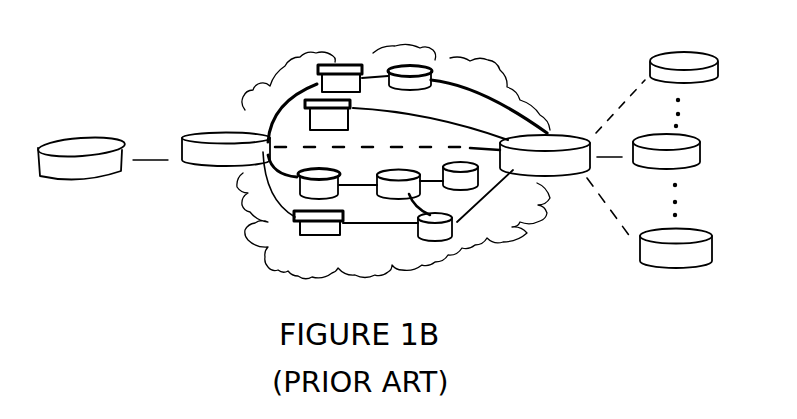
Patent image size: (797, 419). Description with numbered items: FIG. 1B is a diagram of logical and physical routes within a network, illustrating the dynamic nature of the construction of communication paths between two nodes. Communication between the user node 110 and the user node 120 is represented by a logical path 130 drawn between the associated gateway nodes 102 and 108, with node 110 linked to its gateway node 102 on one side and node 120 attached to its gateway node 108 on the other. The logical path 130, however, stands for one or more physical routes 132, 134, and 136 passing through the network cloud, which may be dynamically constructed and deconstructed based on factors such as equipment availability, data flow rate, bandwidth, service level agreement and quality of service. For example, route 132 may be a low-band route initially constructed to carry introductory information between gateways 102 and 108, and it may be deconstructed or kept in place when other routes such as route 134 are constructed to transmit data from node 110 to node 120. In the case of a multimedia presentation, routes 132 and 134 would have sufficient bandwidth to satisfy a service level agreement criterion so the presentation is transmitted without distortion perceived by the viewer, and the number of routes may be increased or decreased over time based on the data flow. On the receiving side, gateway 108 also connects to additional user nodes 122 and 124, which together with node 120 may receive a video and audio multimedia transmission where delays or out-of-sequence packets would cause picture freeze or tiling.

The node 110 is at (73, 188).
The gateway node 102 is at (195, 172).
The logical path 130 is at (466, 142).
The route 132 is at (278, 220).
The route 134 is at (431, 117).
The route 136 is at (300, 78).
The gateway node 108 is at (585, 134).
The node 120 is at (701, 156).
The node 122 is at (722, 75).
The node 124 is at (710, 254).